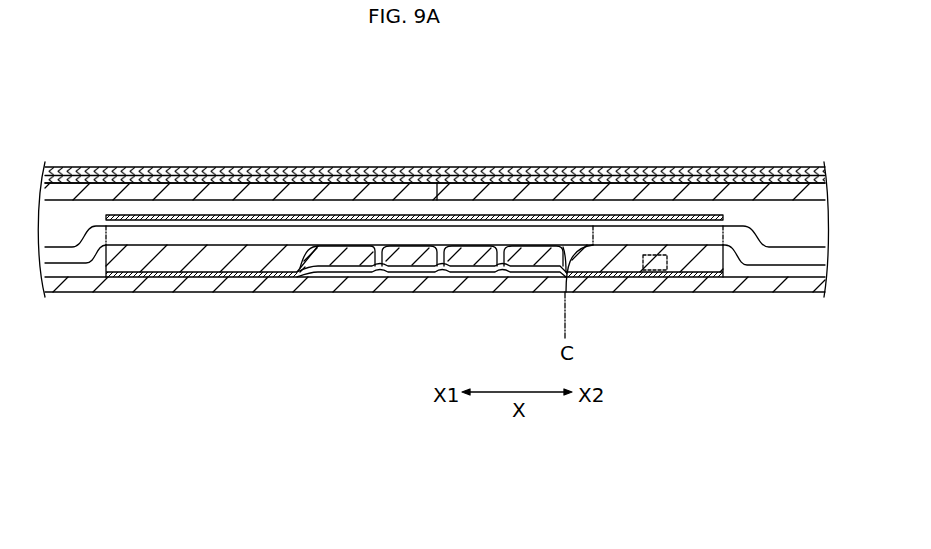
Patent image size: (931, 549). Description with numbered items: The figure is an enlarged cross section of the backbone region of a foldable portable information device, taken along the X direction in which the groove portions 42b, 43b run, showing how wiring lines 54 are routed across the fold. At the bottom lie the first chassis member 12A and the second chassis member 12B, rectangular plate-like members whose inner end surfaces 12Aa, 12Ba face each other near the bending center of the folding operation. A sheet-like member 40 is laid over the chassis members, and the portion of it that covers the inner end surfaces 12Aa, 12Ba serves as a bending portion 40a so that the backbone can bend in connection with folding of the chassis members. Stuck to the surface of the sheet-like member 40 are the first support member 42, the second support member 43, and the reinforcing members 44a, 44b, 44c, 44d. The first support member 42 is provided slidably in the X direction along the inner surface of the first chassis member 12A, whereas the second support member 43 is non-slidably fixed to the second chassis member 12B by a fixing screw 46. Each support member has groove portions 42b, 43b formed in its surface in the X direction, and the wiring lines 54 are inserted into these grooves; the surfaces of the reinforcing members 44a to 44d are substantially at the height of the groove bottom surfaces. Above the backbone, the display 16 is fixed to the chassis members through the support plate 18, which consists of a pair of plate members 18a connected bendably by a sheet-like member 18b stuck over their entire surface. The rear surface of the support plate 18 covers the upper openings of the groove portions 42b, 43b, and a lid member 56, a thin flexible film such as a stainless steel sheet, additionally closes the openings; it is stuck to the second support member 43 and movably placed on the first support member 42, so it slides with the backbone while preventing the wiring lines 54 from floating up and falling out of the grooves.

The first chassis member 12A is at (270, 293).
The second chassis member 12B is at (778, 293).
The inner end surface of the first chassis member 12Aa is at (613, 266).
The inner end surface of the second chassis member 12Ba is at (543, 262).
The display 16 is at (218, 167).
The support plate 18 is at (283, 168).
The plate member 18a is at (465, 192).
The sheet-like member 18b is at (325, 182).
The sheet-like member 40 is at (212, 273).
The bending portion 40a is at (443, 267).
The first support member 42 is at (157, 253).
The groove portion 42b is at (145, 244).
The second support member 43 is at (628, 253).
The groove portion 43b is at (688, 240).
The reinforcing member 44a is at (343, 255).
The reinforcing member 44b is at (412, 253).
The reinforcing member 44c is at (470, 253).
The reinforcing member 44d is at (527, 253).
The fixing screw 46 is at (653, 277).
The wiring line 54 is at (385, 236).
The lid member 56 is at (713, 217).